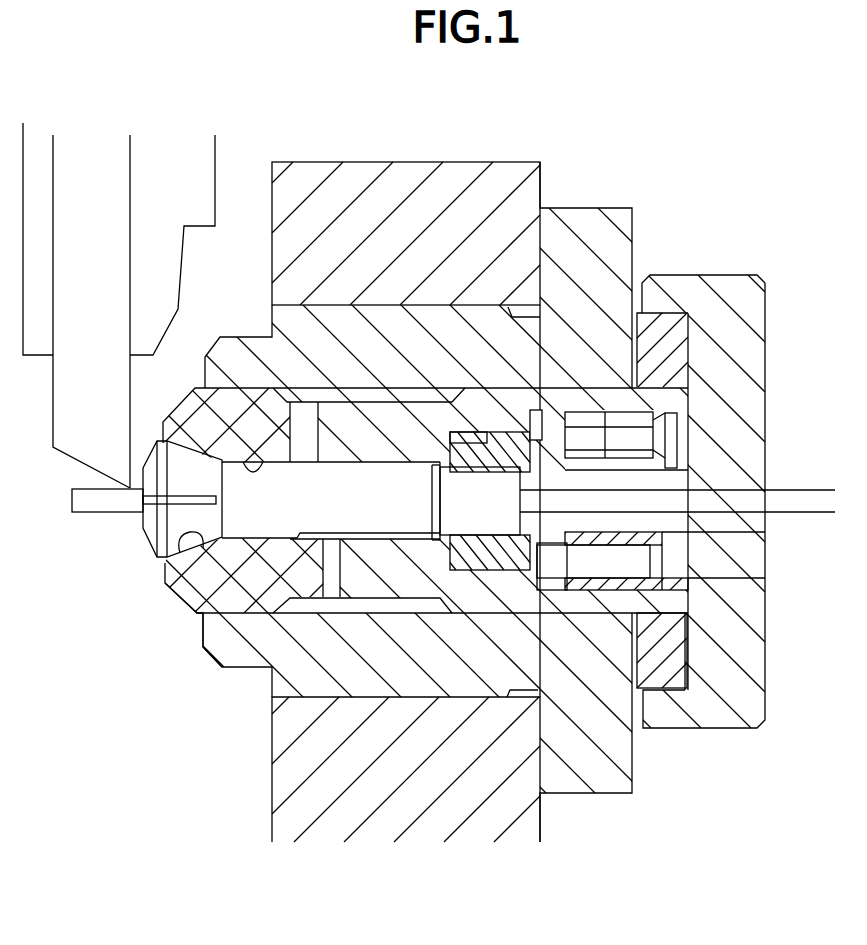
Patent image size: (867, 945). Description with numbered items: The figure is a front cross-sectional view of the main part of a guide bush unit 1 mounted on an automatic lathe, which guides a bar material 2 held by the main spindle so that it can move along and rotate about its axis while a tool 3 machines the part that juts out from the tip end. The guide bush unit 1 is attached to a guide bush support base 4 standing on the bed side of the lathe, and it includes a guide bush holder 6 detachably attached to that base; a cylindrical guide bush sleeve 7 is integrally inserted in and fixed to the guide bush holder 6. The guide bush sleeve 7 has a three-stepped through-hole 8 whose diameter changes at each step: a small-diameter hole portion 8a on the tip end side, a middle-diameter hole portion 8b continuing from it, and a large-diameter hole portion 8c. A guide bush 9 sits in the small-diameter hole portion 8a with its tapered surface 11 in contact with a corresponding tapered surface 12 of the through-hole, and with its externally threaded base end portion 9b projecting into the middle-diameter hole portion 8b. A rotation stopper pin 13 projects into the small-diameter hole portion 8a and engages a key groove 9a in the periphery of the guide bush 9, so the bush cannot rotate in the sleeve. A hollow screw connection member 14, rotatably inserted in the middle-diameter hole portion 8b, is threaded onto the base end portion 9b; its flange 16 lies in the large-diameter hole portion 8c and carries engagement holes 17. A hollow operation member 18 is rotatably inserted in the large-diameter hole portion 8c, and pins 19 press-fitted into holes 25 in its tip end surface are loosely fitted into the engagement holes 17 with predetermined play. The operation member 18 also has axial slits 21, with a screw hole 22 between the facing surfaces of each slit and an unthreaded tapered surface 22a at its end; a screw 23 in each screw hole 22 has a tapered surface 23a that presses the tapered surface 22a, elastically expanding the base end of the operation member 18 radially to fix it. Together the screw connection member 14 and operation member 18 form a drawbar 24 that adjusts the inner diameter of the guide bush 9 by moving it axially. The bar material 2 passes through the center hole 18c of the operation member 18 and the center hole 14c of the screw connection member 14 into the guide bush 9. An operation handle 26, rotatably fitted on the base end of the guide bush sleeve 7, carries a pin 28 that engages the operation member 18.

The guide bush unit 1 is at (433, 472).
The bar material 2 is at (90, 503).
The tool 3 is at (68, 428).
The guide bush support base 4 is at (288, 183).
The guide bush holder 6 is at (587, 222).
The guide bush sleeve 7 is at (208, 597).
The through-hole 8 is at (433, 472).
The small-diameter hole portion 8a is at (287, 462).
The middle-diameter hole portion 8b is at (430, 385).
The large-diameter hole portion 8c is at (520, 420).
The guide bush 9 is at (152, 527).
The key groove 9a is at (340, 695).
The base end portion 9b is at (455, 545).
The tapered surface 11 is at (180, 438).
The tapered surface 12 is at (175, 570).
The rotation stopper pin 13 is at (333, 568).
The screw connection member 14 is at (480, 523).
The center hole 14c is at (648, 280).
The flange 16 is at (560, 580).
The engagement holes 17 is at (641, 732).
The operation member 18 is at (645, 585).
The center hole 18c is at (650, 483).
The pins 19 is at (697, 727).
The slits 21 is at (590, 437).
The screw hole 22 is at (640, 405).
The tapered surface 22a is at (640, 450).
The screw 23 is at (655, 425).
The tapered surface 23a is at (633, 413).
The drawbar 24 is at (670, 468).
The holes 25 is at (655, 570).
The operation handle 26 is at (742, 678).
The pin 28 is at (727, 557).